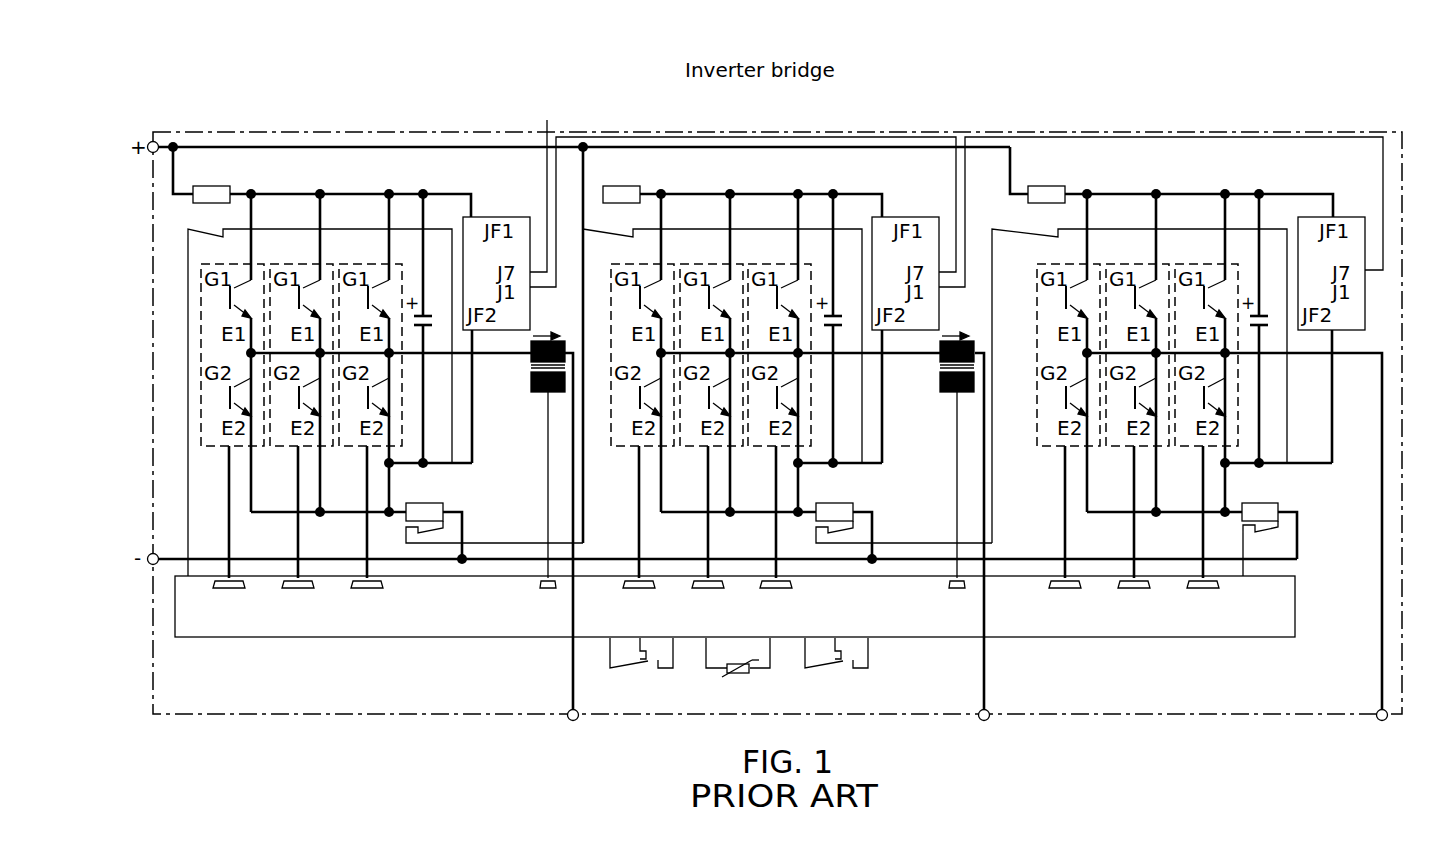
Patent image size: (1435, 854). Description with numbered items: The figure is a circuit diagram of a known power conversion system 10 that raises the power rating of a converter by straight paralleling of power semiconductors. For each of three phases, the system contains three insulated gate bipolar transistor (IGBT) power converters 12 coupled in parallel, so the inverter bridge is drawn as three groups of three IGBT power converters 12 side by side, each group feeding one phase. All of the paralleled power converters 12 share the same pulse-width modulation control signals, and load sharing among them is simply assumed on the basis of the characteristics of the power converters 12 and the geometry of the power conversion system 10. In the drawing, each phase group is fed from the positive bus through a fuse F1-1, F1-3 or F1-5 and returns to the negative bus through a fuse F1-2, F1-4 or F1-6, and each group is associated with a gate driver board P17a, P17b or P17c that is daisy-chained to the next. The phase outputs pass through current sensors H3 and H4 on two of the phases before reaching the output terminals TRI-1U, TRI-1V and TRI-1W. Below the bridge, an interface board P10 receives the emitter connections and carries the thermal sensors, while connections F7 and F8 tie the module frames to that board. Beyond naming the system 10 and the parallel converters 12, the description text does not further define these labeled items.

The power conversion system 10 is at (1314, 90).
The insulated gate bipolar transistor (IGBT) power converter 12 is at (232, 262).
The current sensor (phase U) H3 is at (550, 448).
The current sensor (phase V) H4 is at (958, 448).
The interface board P10 is at (735, 641).
The gate driver board P17a is at (709, 225).
The gate driver board P17b is at (1127, 233).
The gate driver board P17c is at (1331, 273).
The fuse F1-1 is at (213, 181).
The fuse F1-2 is at (422, 497).
The fuse F1-3 is at (623, 181).
The fuse F1-4 is at (832, 497).
The fuse F1-5 is at (1048, 181).
The fuse F1-6 is at (1258, 497).
The frame ground connection F7 is at (315, 417).
The frame ground connection F8 is at (1259, 563).
The phase U output terminal TRI-1U is at (533, 537).
The phase V output terminal TRI-1V is at (947, 537).
The phase W output terminal TRI-1W is at (1338, 702).